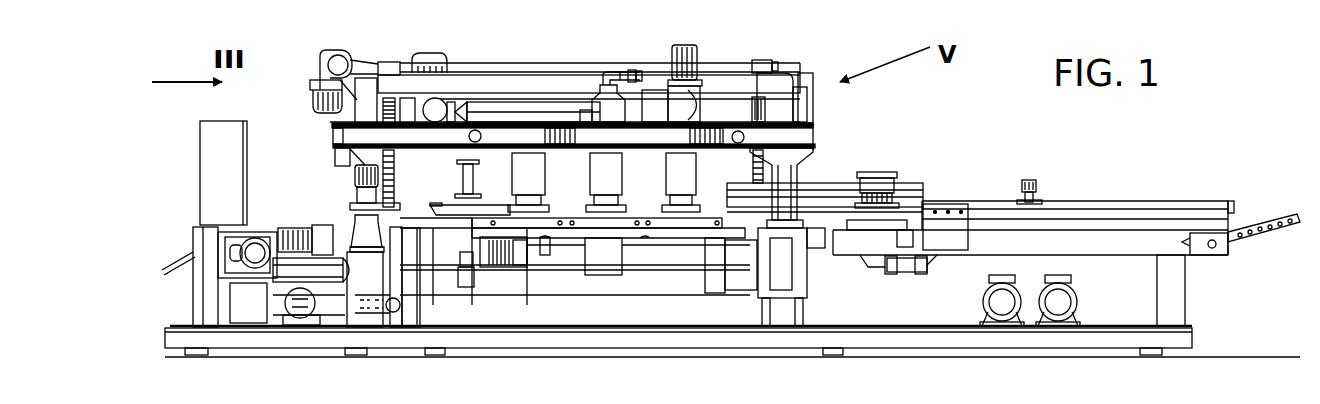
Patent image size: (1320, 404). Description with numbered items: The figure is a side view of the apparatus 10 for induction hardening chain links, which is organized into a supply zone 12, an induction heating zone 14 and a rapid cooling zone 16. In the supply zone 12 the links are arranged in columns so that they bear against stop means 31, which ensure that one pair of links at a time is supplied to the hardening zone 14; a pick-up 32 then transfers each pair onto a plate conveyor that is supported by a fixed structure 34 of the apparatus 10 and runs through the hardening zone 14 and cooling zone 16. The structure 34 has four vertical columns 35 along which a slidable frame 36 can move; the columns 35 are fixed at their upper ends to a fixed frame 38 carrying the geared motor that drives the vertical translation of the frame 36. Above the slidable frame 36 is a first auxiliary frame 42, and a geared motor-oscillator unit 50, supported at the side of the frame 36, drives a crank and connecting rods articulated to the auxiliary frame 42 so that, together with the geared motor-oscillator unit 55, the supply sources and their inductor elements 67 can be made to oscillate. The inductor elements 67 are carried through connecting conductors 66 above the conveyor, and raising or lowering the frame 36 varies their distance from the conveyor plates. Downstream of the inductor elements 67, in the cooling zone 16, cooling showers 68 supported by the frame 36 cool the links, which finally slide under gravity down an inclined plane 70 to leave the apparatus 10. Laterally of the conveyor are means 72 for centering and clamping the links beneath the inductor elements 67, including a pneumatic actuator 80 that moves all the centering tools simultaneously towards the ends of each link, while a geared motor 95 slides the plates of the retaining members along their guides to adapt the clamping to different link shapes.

The apparatus 10 is at (864, 127).
The supply zone 12 is at (1060, 170).
The induction heating zone 14 is at (605, 292).
The rapid cooling zone 16 is at (453, 232).
The stop means 31 is at (938, 194).
The pick-up 32 is at (846, 187).
The fixed structure 34 is at (420, 265).
The vertical columns 35 is at (780, 190).
The slidable frame 36 is at (372, 133).
The fixed frame 38 is at (541, 90).
The first auxiliary frame 42 is at (728, 120).
The geared motor-oscillator unit 50 is at (697, 78).
The geared motor-oscillator unit 55 is at (447, 58).
The connecting conductors 66 is at (573, 197).
The inductor elements 67 is at (535, 210).
The cooling showers 68 is at (447, 212).
The inclined plane 70 is at (172, 258).
The centering and clamping means 72 is at (575, 280).
The pneumatic actuator 80 is at (608, 258).
The geared motor 95 is at (470, 290).